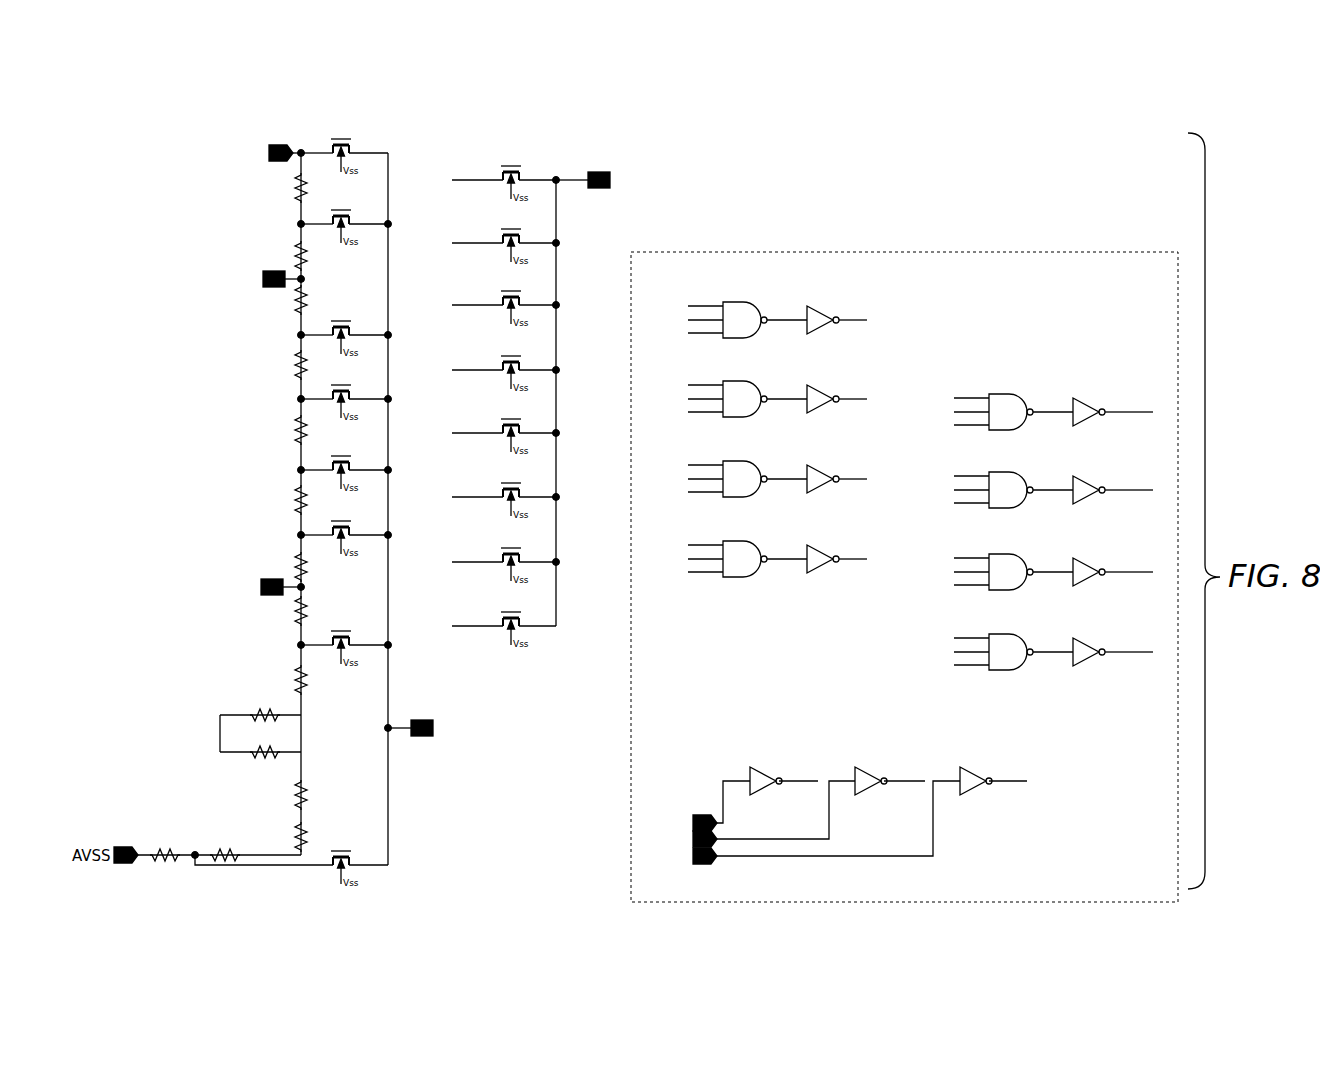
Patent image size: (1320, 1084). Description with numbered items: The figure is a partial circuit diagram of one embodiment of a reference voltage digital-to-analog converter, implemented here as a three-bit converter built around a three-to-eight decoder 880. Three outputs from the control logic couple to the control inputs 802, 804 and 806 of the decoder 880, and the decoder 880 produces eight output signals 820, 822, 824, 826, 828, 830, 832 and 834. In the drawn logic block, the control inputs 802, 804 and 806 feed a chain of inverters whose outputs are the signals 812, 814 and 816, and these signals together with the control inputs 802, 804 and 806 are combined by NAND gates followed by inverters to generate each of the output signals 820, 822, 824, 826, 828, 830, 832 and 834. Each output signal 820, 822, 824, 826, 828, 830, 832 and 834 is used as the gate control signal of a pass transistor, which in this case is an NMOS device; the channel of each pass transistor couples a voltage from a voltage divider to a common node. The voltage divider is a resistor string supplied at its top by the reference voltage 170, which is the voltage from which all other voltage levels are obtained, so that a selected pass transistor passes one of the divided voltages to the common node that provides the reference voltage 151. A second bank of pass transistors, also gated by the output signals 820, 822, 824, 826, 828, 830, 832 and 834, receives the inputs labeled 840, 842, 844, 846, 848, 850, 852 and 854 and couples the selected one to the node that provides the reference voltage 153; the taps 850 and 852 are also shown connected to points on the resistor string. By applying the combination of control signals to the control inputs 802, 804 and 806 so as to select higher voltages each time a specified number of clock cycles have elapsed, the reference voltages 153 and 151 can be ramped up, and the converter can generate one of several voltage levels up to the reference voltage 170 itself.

The reference voltage 170 is at (264, 152).
The reference voltage 151 is at (428, 719).
The reference voltage 153 is at (602, 193).
The control input 802 is at (702, 814).
The control input 804 is at (690, 839).
The control input 806 is at (702, 866).
The inverted control signal 812 is at (793, 778).
The inverted control signal 814 is at (895, 778).
The inverted control signal 816 is at (1005, 783).
The output signal 820 is at (342, 851).
The output signal 822 is at (342, 631).
The output signal 824 is at (342, 521).
The output signal 826 is at (342, 456).
The output signal 828 is at (342, 385).
The output signal 830 is at (342, 321).
The output signal 832 is at (342, 210).
The output signal 834 is at (342, 139).
The resistor ladder tap 840 is at (490, 624).
The resistor ladder tap 842 is at (490, 560).
The resistor ladder tap 844 is at (490, 495).
The resistor ladder tap 846 is at (490, 431).
The resistor ladder tap 848 is at (490, 368).
The resistor ladder tap 850 is at (258, 592).
The resistor ladder tap 852 is at (256, 271).
The resistor ladder tap 854 is at (490, 178).
The 3-to-8 decoder 880 is at (1173, 897).